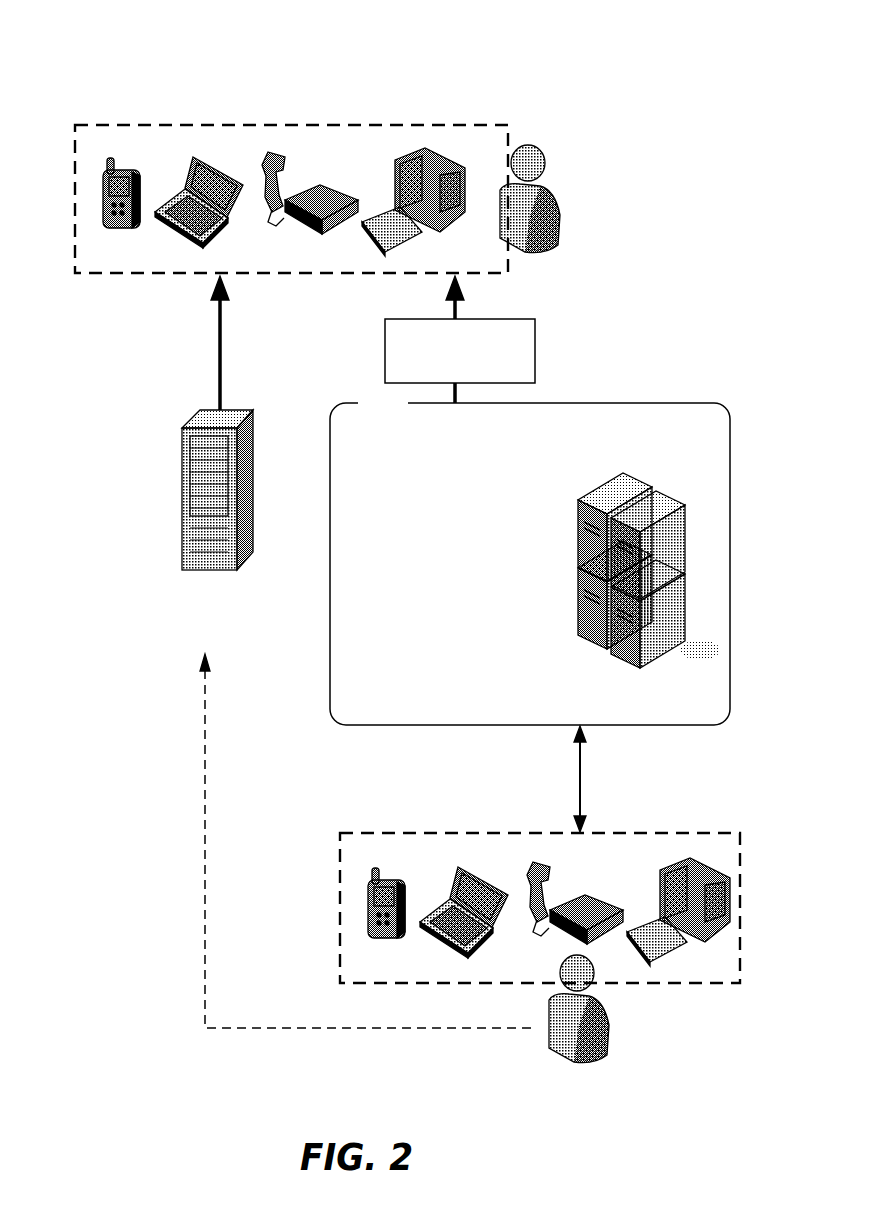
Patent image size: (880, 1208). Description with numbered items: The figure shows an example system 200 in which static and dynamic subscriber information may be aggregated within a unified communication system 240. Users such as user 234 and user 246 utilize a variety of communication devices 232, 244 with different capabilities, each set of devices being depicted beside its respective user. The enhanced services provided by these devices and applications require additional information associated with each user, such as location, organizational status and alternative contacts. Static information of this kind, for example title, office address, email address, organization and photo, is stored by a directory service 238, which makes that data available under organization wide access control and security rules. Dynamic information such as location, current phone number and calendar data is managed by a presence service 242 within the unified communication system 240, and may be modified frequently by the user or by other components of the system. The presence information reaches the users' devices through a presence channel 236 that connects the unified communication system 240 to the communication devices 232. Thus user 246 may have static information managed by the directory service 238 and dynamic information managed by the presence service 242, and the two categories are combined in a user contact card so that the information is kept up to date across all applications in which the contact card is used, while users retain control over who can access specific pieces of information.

The system 200 is at (633, 50).
The communication devices 232 is at (138, 128).
The user 234 is at (562, 186).
The presence channel 236 is at (552, 324).
The directory service 238 is at (176, 412).
The unified communication system 240 is at (668, 389).
The presence service 242 is at (579, 488).
The communication devices 244 is at (403, 842).
The user 246 is at (575, 1074).